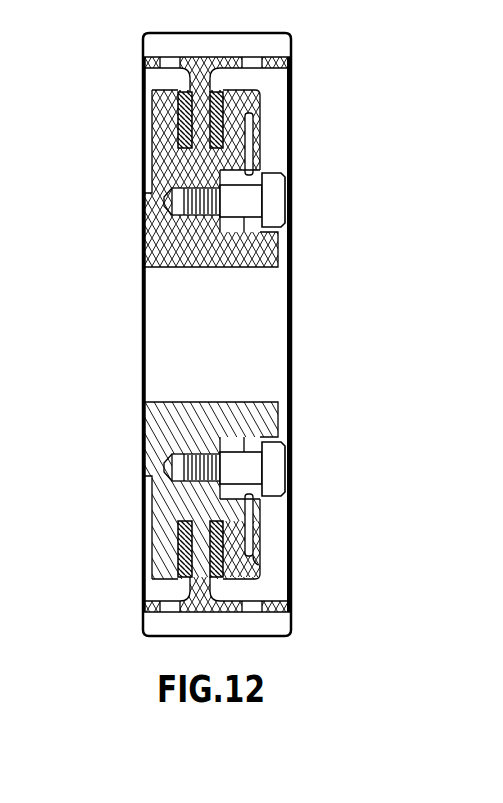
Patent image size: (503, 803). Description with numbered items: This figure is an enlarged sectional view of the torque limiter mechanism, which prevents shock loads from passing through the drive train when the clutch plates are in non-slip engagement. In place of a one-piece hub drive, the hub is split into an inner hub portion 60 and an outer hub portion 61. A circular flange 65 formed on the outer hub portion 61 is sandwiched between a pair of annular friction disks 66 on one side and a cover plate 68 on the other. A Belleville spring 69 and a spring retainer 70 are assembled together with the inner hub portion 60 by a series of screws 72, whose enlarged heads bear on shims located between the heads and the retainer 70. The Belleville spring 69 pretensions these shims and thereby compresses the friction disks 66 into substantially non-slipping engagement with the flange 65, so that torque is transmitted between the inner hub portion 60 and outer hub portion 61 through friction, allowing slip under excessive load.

The inner hub portion 60 is at (220, 248).
The outer hub portion 61 is at (213, 583).
The circular flange 65 is at (255, 603).
The annular friction disks 66 is at (213, 120).
The cover plate 68 is at (260, 570).
The Belleville spring 69 is at (248, 533).
The spring retainer 70 is at (262, 499).
The screws 72 is at (273, 200).